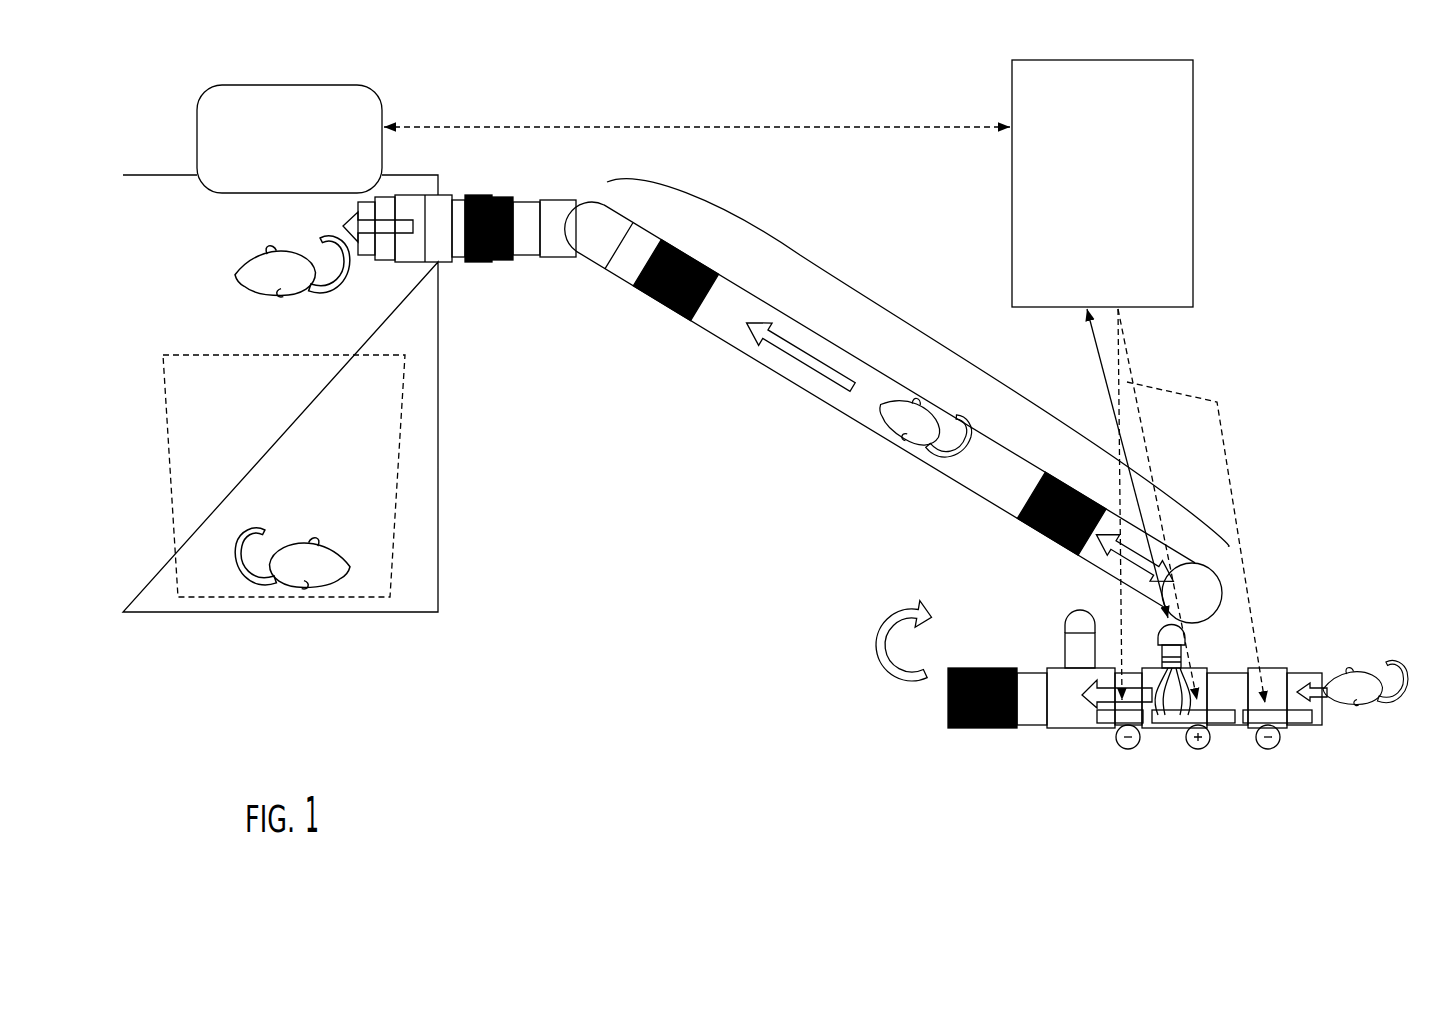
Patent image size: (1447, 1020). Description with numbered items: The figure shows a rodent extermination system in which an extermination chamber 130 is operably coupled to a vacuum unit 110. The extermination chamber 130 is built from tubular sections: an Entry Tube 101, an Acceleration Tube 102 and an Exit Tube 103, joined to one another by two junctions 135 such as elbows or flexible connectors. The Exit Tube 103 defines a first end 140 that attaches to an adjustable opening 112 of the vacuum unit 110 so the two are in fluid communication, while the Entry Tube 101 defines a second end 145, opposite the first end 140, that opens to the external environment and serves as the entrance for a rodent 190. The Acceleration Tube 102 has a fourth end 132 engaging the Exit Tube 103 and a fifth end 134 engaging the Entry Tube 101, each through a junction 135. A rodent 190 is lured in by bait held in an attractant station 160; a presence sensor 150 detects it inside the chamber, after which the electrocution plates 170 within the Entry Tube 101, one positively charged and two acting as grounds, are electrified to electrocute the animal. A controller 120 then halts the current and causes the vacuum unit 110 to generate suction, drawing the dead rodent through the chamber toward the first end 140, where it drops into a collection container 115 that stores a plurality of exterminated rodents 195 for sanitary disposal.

The Entry Tube 101 is at (1113, 695).
The Acceleration Tube 102 is at (908, 337).
The Exit Tube 103 is at (602, 279).
The vacuum unit 110 is at (118, 196).
The opening 112 is at (386, 199).
The collection container 115 is at (378, 477).
The controller 120 is at (1102, 183).
The extermination chamber 130 is at (893, 735).
The fourth end 132 is at (620, 284).
The fifth end 134 is at (1148, 597).
The junction 135 is at (583, 195).
The first end 140 is at (444, 199).
The second end 145 is at (1298, 662).
The presence sensor 150 is at (1194, 655).
The attractant station 160 is at (1062, 652).
The electrocution plates 170 is at (1093, 717).
The rodent 190 is at (235, 270).
The exterminated rodents 195 is at (302, 585).